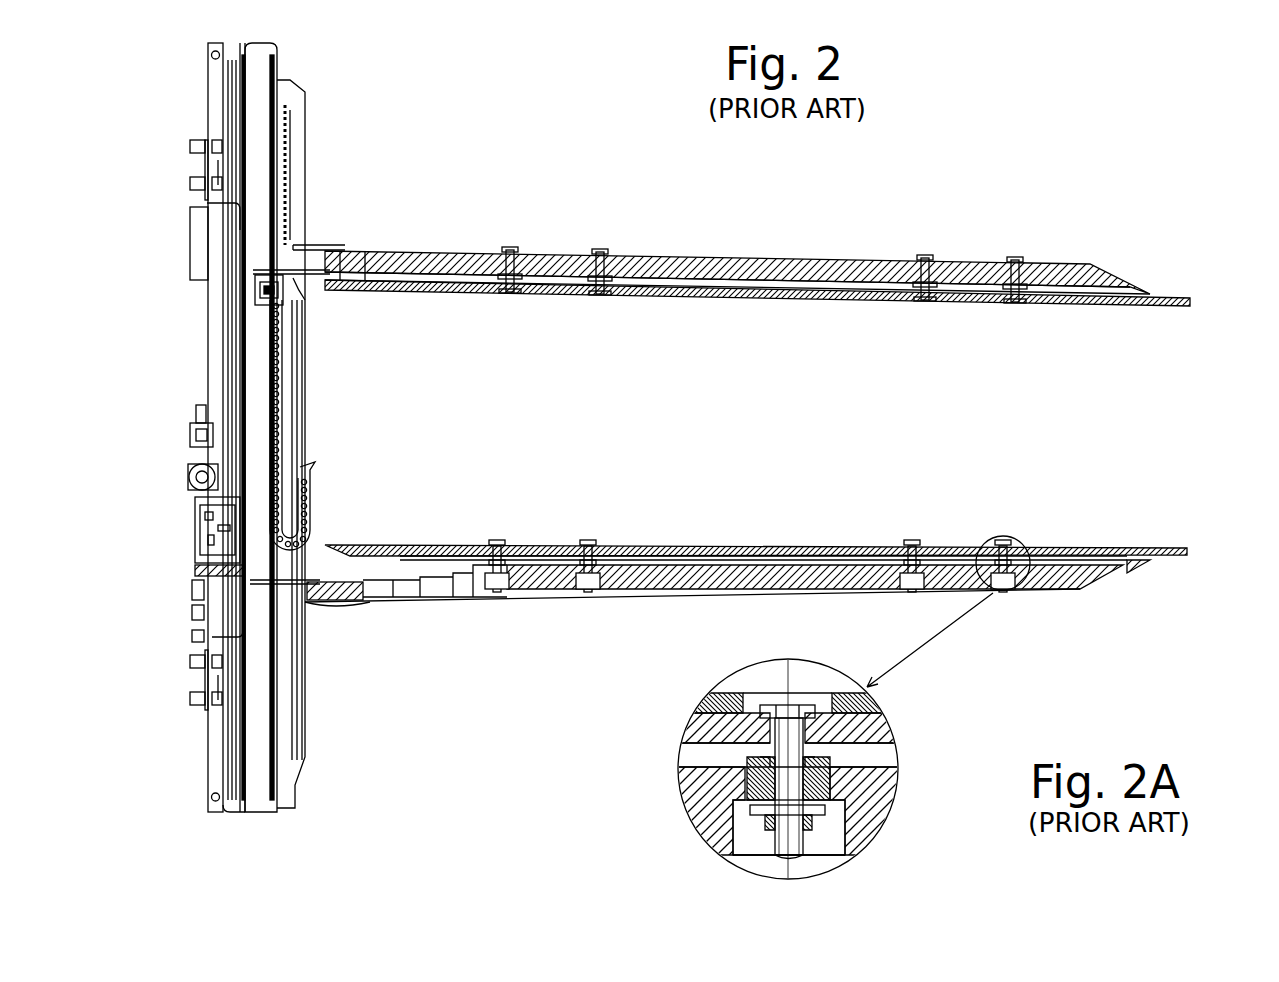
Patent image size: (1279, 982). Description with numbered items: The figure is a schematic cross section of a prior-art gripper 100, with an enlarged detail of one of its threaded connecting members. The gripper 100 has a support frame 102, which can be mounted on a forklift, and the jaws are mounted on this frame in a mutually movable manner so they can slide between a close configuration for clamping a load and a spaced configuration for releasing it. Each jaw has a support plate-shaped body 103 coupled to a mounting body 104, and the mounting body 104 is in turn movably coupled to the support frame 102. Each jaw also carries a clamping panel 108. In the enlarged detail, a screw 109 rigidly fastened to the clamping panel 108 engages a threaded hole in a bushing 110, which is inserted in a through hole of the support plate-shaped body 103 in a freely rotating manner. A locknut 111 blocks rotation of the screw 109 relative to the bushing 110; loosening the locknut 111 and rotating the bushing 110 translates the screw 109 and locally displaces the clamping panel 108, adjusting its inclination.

In FIG. 2, the gripper 100 is at (1128, 197).
In FIG. 2, the support frame 102 is at (210, 352).
In FIG. 2, the support plate-shaped body 103 is at (1078, 590).
In FIG. 2A, the support plate-shaped body 103 is at (895, 793).
In FIG. 2, the mounting body 104 is at (345, 592).
In FIG. 2, the clamping panel 108 is at (1170, 548).
In FIG. 2A, the clamping panel 108 is at (877, 722).
In FIG. 2A, the screw 109 is at (732, 853).
In FIG. 2A, the bushing 110 is at (760, 760).
In FIG. 2A, the locknut 111 is at (817, 830).